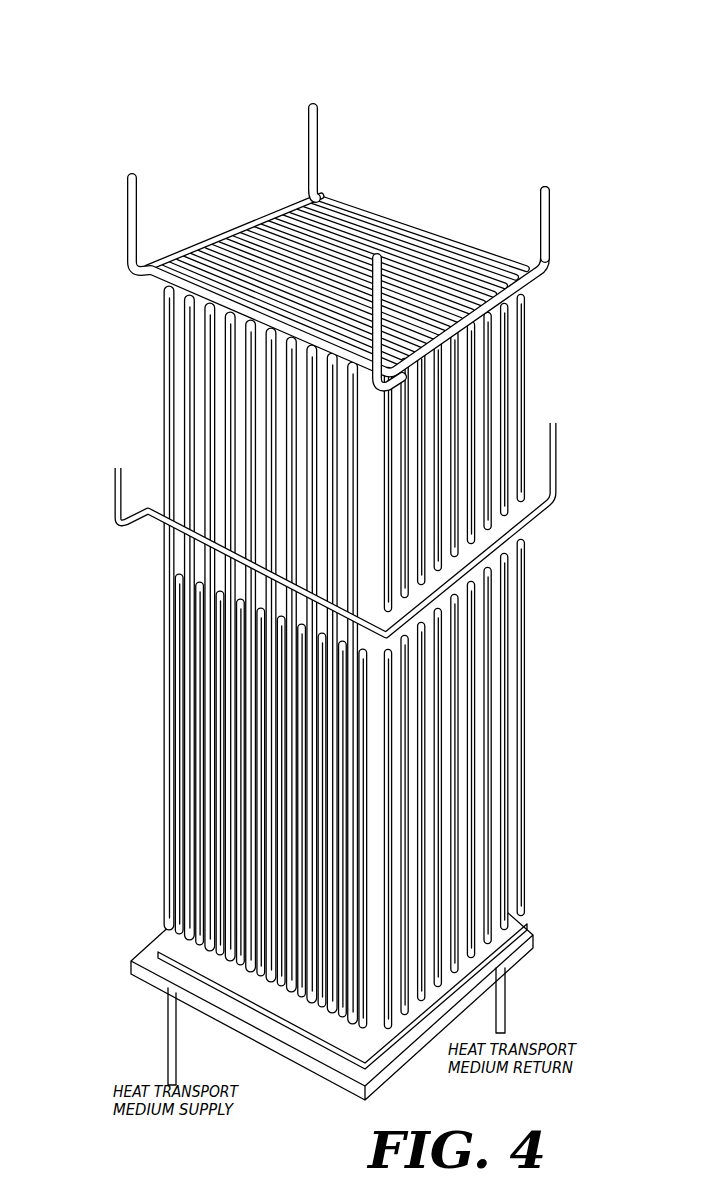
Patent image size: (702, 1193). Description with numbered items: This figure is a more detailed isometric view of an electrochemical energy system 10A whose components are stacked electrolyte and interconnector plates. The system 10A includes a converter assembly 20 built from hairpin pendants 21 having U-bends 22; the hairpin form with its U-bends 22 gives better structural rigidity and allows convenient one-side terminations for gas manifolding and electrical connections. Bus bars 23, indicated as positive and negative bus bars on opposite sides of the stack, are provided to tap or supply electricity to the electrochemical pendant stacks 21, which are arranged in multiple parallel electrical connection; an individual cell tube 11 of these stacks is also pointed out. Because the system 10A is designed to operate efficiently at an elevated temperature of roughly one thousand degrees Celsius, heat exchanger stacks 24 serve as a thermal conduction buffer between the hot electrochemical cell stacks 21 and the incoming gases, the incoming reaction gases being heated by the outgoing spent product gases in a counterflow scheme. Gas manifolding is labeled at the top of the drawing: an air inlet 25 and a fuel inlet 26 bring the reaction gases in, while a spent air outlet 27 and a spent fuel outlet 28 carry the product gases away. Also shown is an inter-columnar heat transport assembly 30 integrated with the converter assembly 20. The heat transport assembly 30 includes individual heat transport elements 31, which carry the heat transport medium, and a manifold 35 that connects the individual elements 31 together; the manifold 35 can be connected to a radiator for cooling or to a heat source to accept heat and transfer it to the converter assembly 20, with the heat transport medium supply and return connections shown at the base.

The system 10A is at (102, 237).
The electrochemical cell tube 11 is at (500, 678).
The converter assembly 20 is at (508, 600).
The hairpin pendants 21 is at (505, 626).
The U-bends 22 is at (512, 908).
The bus bars 23 is at (106, 490).
The heat exchanger stacks 24 is at (130, 325).
The air inlet pipe 25 is at (309, 90).
The fuel inlet pipe 26 is at (541, 172).
The spent air outlet pipe 27 is at (369, 248).
The spent fuel outlet pipe 28 is at (128, 160).
The inter-columnar heat transport assembly 30 is at (139, 918).
The heat transport elements 31 is at (170, 942).
The manifold 35 is at (160, 982).